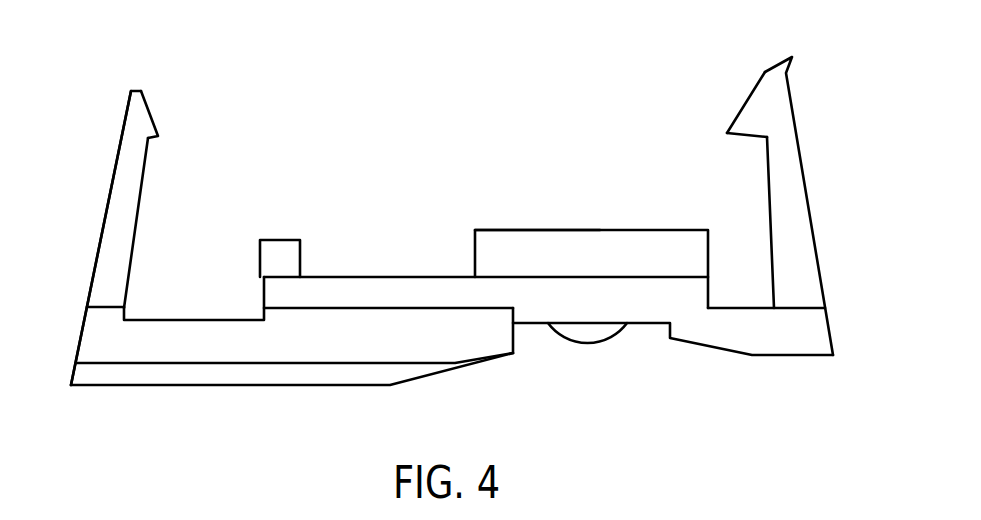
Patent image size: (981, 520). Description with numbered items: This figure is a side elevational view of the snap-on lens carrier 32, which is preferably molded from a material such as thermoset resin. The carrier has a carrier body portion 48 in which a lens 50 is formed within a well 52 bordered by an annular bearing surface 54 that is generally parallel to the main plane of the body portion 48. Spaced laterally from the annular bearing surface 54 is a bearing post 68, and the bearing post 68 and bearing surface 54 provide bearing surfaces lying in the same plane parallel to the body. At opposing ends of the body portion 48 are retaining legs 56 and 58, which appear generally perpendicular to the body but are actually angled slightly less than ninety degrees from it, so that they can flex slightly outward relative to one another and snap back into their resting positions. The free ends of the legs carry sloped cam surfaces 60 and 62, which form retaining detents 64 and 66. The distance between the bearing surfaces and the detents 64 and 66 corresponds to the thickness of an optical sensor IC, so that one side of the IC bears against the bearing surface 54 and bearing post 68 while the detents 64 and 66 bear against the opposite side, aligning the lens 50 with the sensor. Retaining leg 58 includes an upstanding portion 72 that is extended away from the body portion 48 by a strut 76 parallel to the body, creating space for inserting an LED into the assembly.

The lens carrier 32 is at (448, 256).
The carrier body portion 48 is at (422, 275).
The lens 50 is at (578, 343).
The well 52 is at (591, 223).
The annular bearing surface 54 is at (488, 230).
The retaining leg 56 is at (778, 195).
The retaining leg 58 is at (122, 230).
The sloped cam surface 60 is at (747, 93).
The sloped cam surface 62 is at (152, 113).
The retaining detent 64 is at (752, 138).
The retaining detent 66 is at (152, 142).
The bearing post 68 is at (282, 240).
The upstanding portion 72 is at (113, 247).
The strut 76 is at (201, 347).